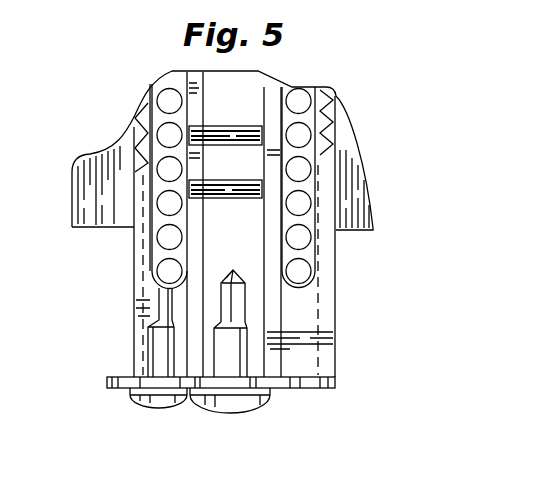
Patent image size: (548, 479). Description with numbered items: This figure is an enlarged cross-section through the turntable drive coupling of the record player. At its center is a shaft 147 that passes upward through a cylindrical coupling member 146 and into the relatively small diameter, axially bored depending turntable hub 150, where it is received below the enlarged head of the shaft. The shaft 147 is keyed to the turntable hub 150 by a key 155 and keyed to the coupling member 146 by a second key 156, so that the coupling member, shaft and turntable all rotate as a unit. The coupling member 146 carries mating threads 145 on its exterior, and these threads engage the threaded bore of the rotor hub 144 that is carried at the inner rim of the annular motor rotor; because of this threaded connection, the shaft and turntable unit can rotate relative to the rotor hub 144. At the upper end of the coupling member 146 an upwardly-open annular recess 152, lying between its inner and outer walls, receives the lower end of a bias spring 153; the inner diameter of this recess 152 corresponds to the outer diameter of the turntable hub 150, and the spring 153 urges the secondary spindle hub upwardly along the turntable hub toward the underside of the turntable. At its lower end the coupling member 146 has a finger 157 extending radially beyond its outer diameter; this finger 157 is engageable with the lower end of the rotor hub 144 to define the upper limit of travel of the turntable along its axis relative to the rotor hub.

The rotor hub 144 is at (366, 206).
The mating threads 145 is at (330, 110).
The coupling member 146 is at (310, 360).
The shaft 147 is at (238, 78).
The turntable hub 150 is at (195, 88).
The annular recess 152 is at (308, 190).
The bias spring 153 is at (302, 168).
The key 155 is at (190, 135).
The key 156 is at (186, 182).
The finger 157 is at (120, 388).